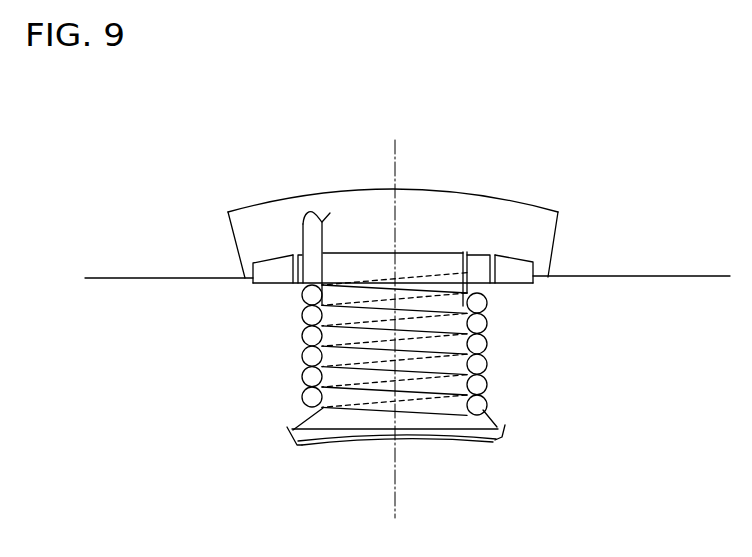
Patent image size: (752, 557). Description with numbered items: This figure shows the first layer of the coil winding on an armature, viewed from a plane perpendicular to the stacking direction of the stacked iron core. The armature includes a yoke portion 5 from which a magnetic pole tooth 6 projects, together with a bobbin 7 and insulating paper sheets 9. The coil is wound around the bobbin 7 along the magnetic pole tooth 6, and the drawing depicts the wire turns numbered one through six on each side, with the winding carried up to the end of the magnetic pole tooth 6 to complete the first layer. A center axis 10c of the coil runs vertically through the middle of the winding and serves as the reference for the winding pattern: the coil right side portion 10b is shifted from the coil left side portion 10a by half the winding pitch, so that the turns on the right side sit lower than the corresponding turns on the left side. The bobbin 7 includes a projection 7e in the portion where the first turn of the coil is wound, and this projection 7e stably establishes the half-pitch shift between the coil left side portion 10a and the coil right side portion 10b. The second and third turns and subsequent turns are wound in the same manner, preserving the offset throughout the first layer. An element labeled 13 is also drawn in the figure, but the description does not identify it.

The yoke portion 5 is at (333, 194).
The magnetic pole tooth 6 is at (481, 432).
The bobbin 7 is at (440, 270).
The projection 7e is at (480, 290).
The insulating paper sheet 9 is at (615, 276).
The coil left side portion 10a is at (302, 353).
The coil right side portion 10b is at (488, 368).
The center axis of the coil 10c is at (395, 167).
The terminal pin 13 is at (311, 242).